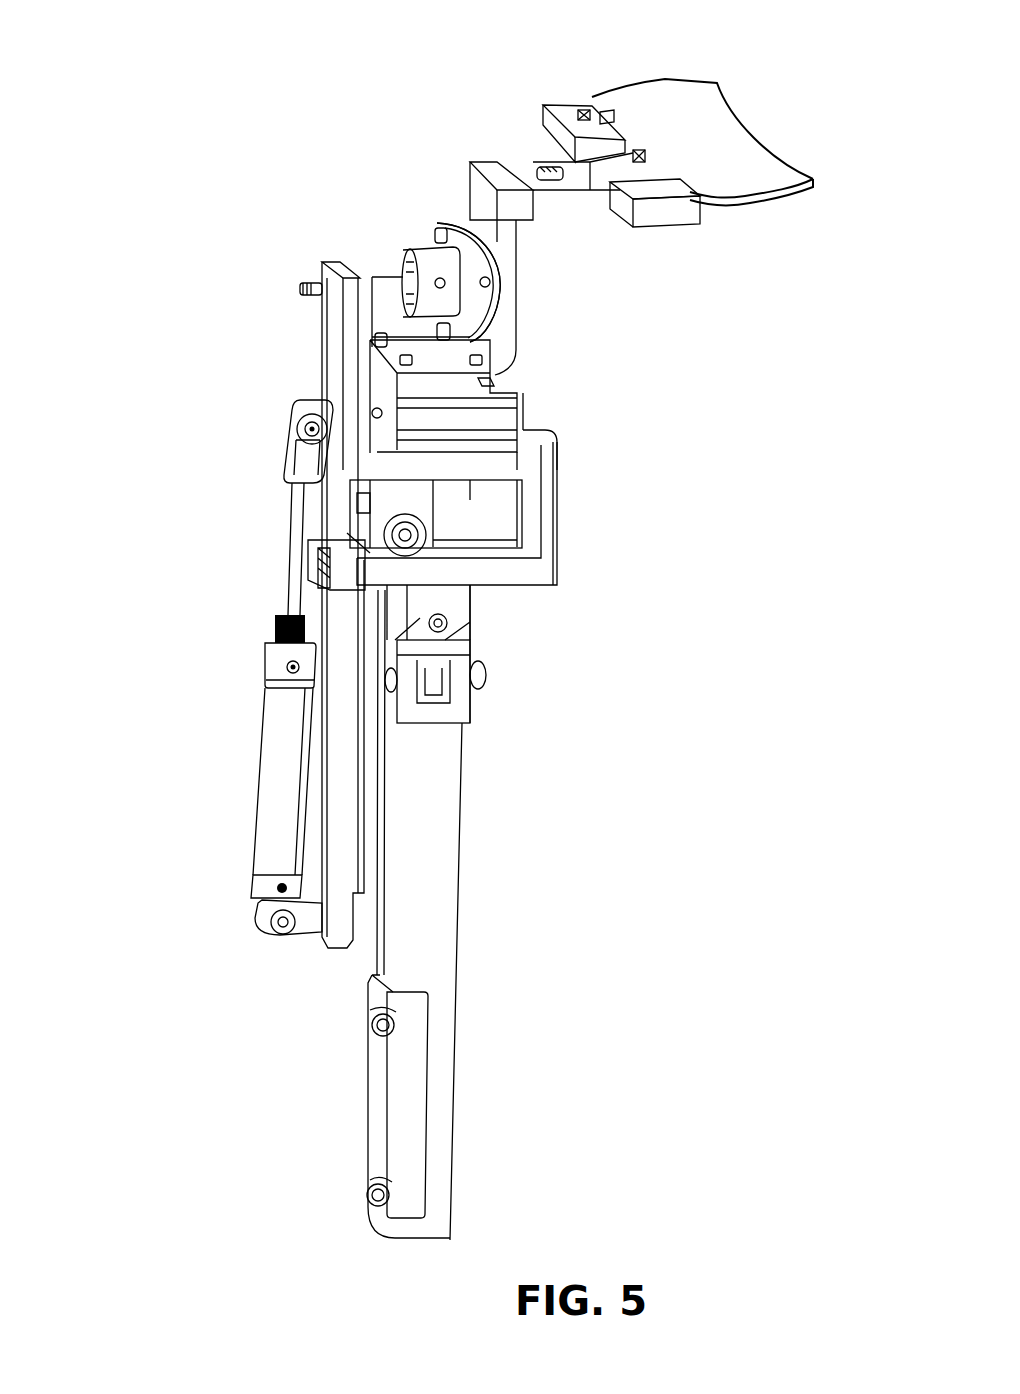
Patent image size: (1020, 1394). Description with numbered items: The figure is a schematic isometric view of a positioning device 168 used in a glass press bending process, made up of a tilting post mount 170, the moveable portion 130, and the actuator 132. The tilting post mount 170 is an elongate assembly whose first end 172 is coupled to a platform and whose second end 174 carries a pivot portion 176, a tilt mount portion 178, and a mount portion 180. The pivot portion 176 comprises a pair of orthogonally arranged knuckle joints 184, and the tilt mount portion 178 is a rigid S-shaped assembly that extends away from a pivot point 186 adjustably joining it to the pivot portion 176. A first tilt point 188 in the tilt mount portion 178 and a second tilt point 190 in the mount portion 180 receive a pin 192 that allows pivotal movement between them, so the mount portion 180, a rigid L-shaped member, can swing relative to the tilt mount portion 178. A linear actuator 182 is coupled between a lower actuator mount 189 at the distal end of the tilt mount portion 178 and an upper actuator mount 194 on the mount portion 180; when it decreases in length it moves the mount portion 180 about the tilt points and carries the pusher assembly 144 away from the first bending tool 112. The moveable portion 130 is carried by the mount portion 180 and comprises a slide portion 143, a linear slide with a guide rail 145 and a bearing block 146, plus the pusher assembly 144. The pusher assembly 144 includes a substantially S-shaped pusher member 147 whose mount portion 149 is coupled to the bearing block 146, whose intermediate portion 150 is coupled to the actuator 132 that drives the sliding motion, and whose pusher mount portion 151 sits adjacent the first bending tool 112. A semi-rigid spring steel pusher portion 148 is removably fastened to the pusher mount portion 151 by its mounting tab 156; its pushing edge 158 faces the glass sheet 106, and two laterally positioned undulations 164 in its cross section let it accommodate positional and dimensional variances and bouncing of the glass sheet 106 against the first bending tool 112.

The moveable portion 130 is at (338, 58).
The positioning device 168 is at (186, 163).
The glass sheet 106 is at (682, 148).
The pusher portion 148 is at (503, 112).
The pushing edge 158 is at (632, 110).
The undulations 164 is at (590, 116).
The pusher assembly 144 is at (472, 157).
The mounting tab 156 is at (575, 178).
The pusher mount portion 151 is at (548, 212).
The intermediate portion 150 is at (517, 300).
The pusher member 147 is at (468, 282).
The first bending tool 112 is at (668, 210).
The actuator 132 is at (470, 232).
The mount portion 149 is at (520, 380).
The slide portion 143 is at (517, 393).
The guide rail 145 is at (523, 420).
The bearing block 146 is at (490, 435).
The second end 174 is at (602, 513).
The second tilt point 190 is at (423, 508).
The tilt mount portion 178 is at (540, 560).
The first tilt point 188 is at (363, 553).
The pivot point 186 is at (438, 617).
The knuckle joints 184 is at (460, 648).
The pivot portion 176 is at (507, 613).
The tilting post mount 170 is at (460, 890).
The first end 172 is at (445, 1122).
The actuator 182 is at (273, 777).
The lower actuator mount 189 is at (302, 918).
The mount portion 180 is at (322, 377).
The upper actuator mount 194 is at (294, 413).
The pin 192 is at (400, 527).